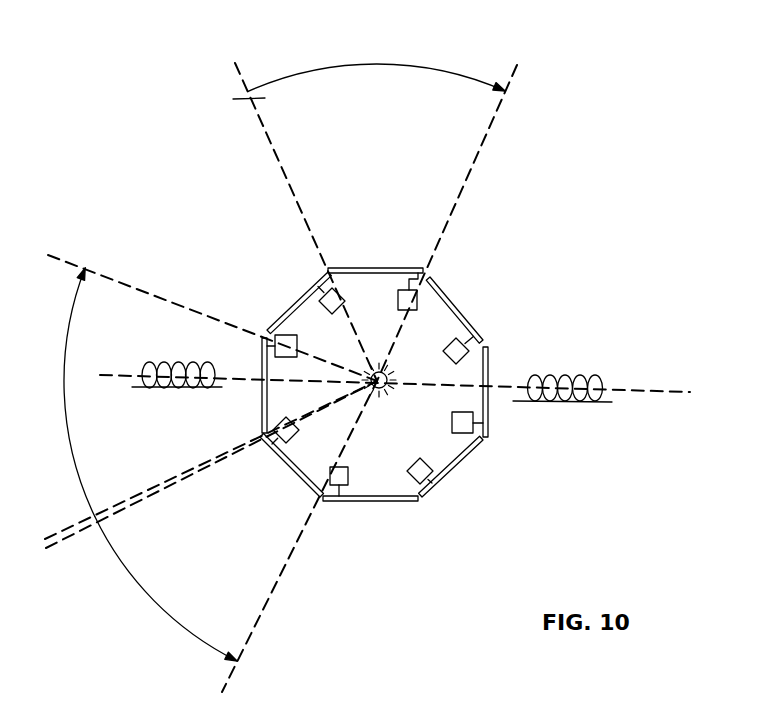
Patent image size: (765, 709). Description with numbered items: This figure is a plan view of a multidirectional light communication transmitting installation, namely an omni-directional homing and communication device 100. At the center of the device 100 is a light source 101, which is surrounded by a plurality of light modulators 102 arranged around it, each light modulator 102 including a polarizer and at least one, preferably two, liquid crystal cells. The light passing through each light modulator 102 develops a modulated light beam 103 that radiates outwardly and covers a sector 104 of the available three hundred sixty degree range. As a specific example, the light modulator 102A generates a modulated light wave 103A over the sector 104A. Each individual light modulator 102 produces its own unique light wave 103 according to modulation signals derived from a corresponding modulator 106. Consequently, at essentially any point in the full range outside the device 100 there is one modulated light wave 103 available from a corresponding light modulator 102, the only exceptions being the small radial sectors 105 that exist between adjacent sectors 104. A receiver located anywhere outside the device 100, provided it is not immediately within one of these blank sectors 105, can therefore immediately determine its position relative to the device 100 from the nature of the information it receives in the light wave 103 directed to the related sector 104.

The omni-directional homing and communication device 100 is at (422, 371).
The light source 101 is at (389, 371).
The light modulator 102 is at (368, 268).
The light modulator 102A is at (268, 410).
The modulated light beam 103 is at (548, 402).
The modulated light wave 103A is at (222, 387).
The sector 104 is at (300, 348).
The sector 104A is at (94, 392).
The small radial sector 105 is at (82, 535).
The modulator 106 is at (455, 341).